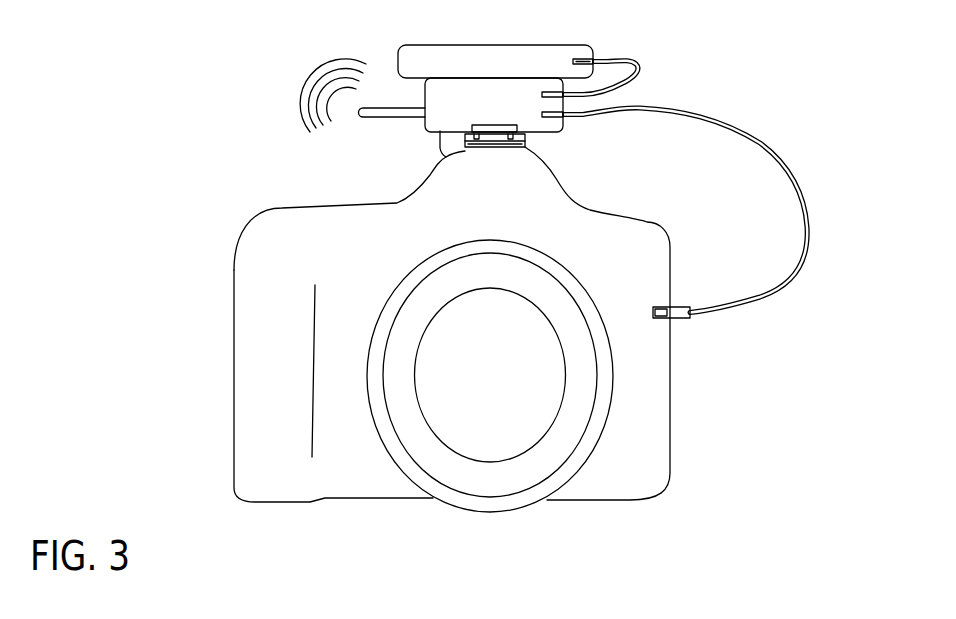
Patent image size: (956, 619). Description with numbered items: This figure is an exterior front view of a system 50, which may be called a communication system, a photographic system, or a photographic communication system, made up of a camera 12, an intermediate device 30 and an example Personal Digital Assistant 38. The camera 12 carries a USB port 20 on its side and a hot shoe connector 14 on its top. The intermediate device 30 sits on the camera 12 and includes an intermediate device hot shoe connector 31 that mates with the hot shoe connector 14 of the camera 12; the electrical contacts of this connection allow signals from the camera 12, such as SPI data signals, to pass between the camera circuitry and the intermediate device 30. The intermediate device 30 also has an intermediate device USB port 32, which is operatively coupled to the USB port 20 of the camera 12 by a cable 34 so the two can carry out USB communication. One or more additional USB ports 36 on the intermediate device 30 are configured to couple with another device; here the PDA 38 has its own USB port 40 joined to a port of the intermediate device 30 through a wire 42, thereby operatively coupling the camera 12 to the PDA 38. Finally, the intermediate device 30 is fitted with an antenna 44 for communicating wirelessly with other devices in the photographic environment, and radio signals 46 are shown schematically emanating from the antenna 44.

The system 50 is at (118, 81).
The camera 12 is at (672, 410).
The hot shoe connector 14 is at (523, 147).
The USB port 20 is at (662, 307).
The intermediate device 30 is at (437, 157).
The intermediate device hot shoe connector 31 is at (527, 140).
The intermediate device USB port 32 is at (562, 125).
The cable 34 is at (771, 148).
The additional USB port 36 is at (556, 98).
The Personal Digital Assistant 38 is at (510, 45).
The USB port 40 is at (593, 59).
The wire 42 is at (636, 64).
The antenna 44 is at (377, 120).
The radio signals 46 is at (325, 64).